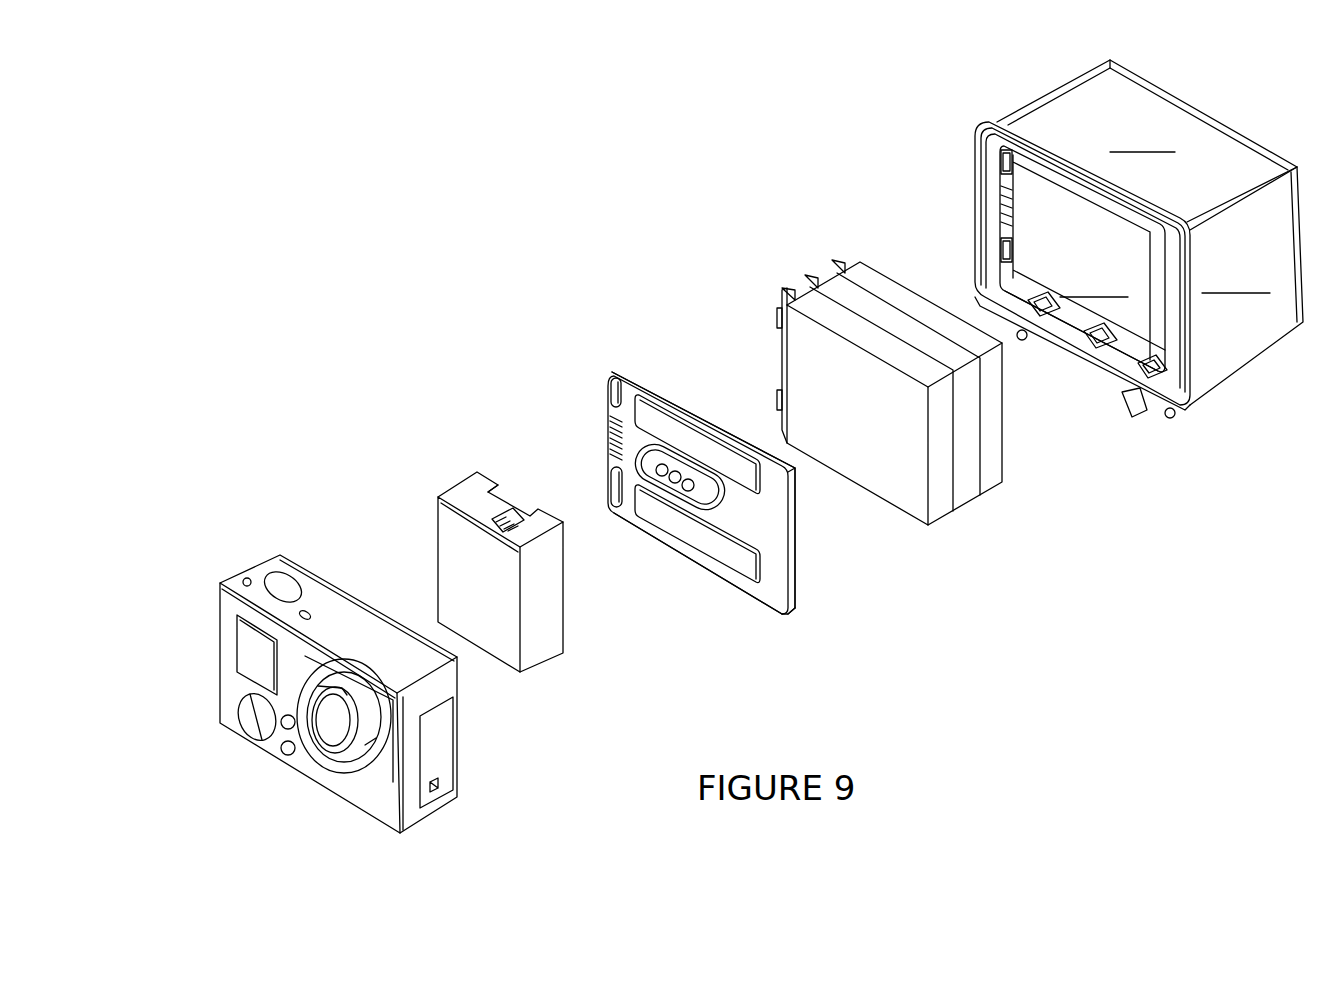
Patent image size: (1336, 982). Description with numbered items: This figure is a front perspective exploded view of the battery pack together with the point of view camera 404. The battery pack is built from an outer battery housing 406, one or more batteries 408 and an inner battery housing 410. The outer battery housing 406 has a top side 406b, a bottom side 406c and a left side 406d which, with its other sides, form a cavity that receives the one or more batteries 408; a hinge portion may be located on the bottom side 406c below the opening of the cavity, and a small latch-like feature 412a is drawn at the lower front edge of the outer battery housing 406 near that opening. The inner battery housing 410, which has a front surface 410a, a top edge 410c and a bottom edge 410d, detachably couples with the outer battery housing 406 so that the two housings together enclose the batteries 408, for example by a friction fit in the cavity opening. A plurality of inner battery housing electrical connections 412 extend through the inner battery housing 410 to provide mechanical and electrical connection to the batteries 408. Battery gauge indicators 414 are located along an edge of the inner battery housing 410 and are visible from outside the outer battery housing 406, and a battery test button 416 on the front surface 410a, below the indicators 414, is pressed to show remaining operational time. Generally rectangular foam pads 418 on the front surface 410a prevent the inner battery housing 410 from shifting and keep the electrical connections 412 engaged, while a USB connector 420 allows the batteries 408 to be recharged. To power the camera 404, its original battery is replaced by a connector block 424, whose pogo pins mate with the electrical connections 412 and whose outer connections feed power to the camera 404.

The camera 404 is at (303, 773).
The outer battery housing 406 is at (1125, 264).
The top side 406b is at (1147, 141).
The bottom side 406c is at (1086, 324).
The left side 406d is at (1246, 286).
The batteries 408 is at (835, 287).
The inner battery housing 410 is at (714, 499).
The front surface 410a is at (765, 595).
The top edge 410c is at (650, 392).
The bottom edge 410d is at (763, 603).
The inner battery housing electrical connections 412 is at (697, 493).
The latch 412a is at (1137, 400).
The battery gauge indicators 414 is at (610, 427).
The battery test button 416 is at (612, 477).
The foam pads 418 is at (685, 432).
The USB connector 420 is at (610, 383).
The connector block 424 is at (457, 490).